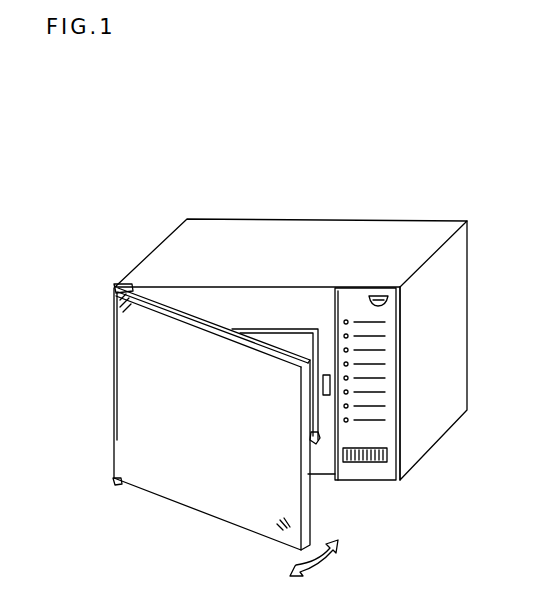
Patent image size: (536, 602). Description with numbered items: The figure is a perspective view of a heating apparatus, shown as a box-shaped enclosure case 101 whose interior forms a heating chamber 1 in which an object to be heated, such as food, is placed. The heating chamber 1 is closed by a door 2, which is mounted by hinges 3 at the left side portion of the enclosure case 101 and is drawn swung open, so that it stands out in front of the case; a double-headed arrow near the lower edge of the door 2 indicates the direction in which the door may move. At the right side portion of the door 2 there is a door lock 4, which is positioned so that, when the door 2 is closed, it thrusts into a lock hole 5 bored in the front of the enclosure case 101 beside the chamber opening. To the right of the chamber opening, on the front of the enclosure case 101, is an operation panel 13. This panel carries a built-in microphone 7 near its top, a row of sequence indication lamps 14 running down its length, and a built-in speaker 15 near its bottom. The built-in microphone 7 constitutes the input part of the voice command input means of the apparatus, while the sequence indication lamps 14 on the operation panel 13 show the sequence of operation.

The enclosure case 101 is at (424, 228).
The heating chamber 1 is at (273, 335).
The door 2 is at (182, 494).
The hinges 3 is at (125, 285).
The door lock 4 is at (315, 438).
The lock hole 5 is at (323, 375).
The built-in microphone 7 is at (378, 298).
The operation panel 13 is at (383, 481).
The sequence indication lamps 14 is at (345, 335).
The built-in speaker 15 is at (388, 455).